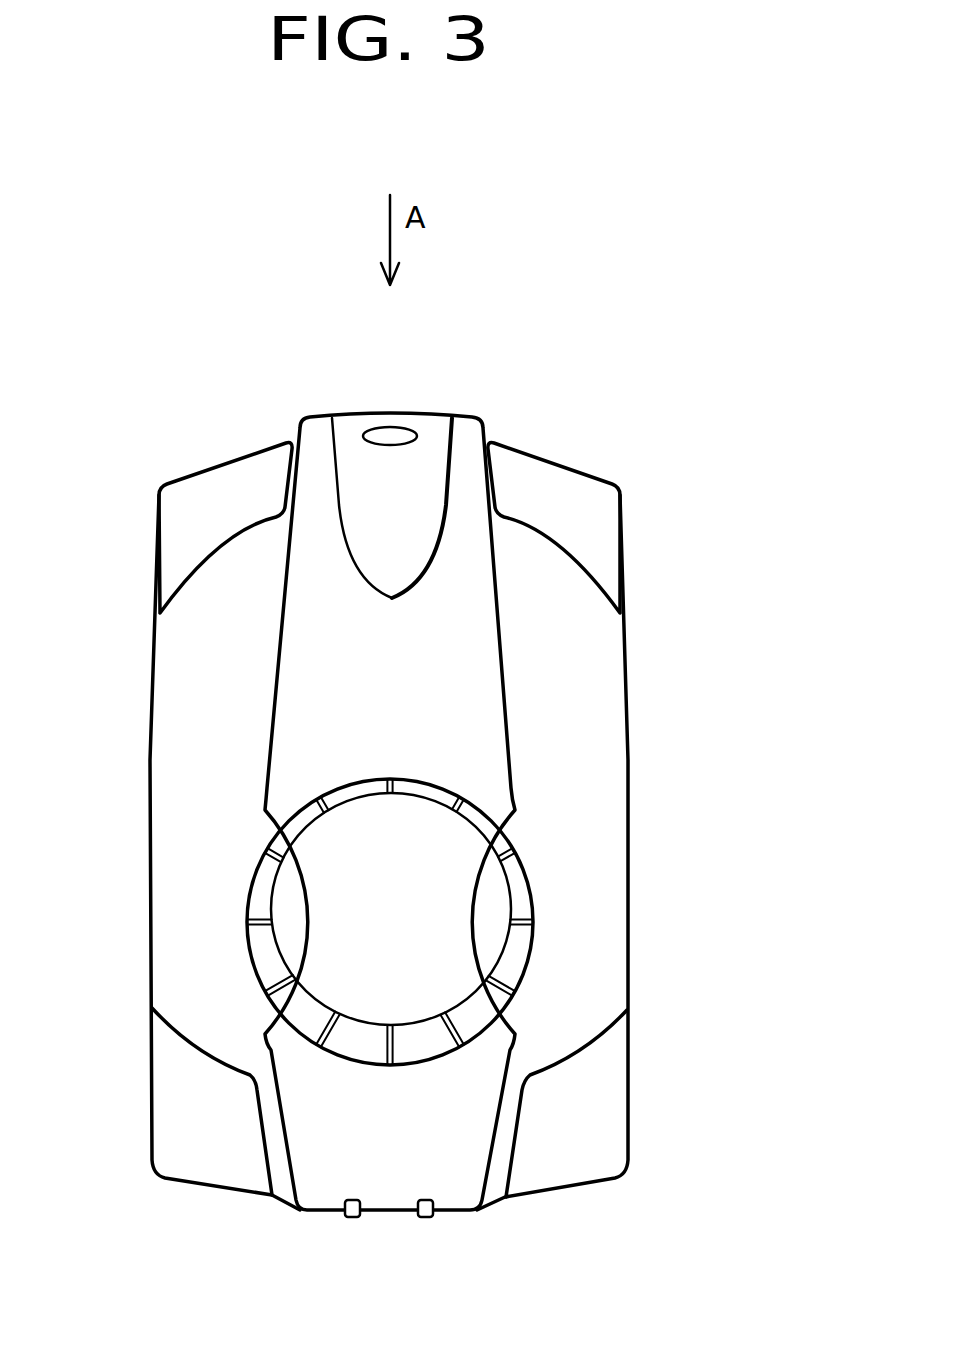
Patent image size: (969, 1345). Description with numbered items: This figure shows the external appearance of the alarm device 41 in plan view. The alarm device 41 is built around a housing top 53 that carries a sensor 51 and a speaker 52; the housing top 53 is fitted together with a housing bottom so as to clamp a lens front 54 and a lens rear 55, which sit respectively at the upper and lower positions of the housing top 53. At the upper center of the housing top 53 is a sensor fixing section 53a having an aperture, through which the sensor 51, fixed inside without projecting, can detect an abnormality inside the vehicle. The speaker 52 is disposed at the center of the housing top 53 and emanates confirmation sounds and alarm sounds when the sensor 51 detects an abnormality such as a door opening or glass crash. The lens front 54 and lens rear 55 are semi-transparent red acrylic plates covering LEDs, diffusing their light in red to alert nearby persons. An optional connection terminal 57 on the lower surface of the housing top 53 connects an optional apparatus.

The alarm device 41 is at (568, 643).
The sensor 51 is at (392, 436).
The speaker 52 is at (437, 900).
The housing top 53 is at (613, 708).
The sensor fixing section 53a is at (375, 522).
The lens front 54 is at (225, 480).
The lens rear 55 is at (183, 1113).
The optional connection terminal 57 is at (426, 1218).